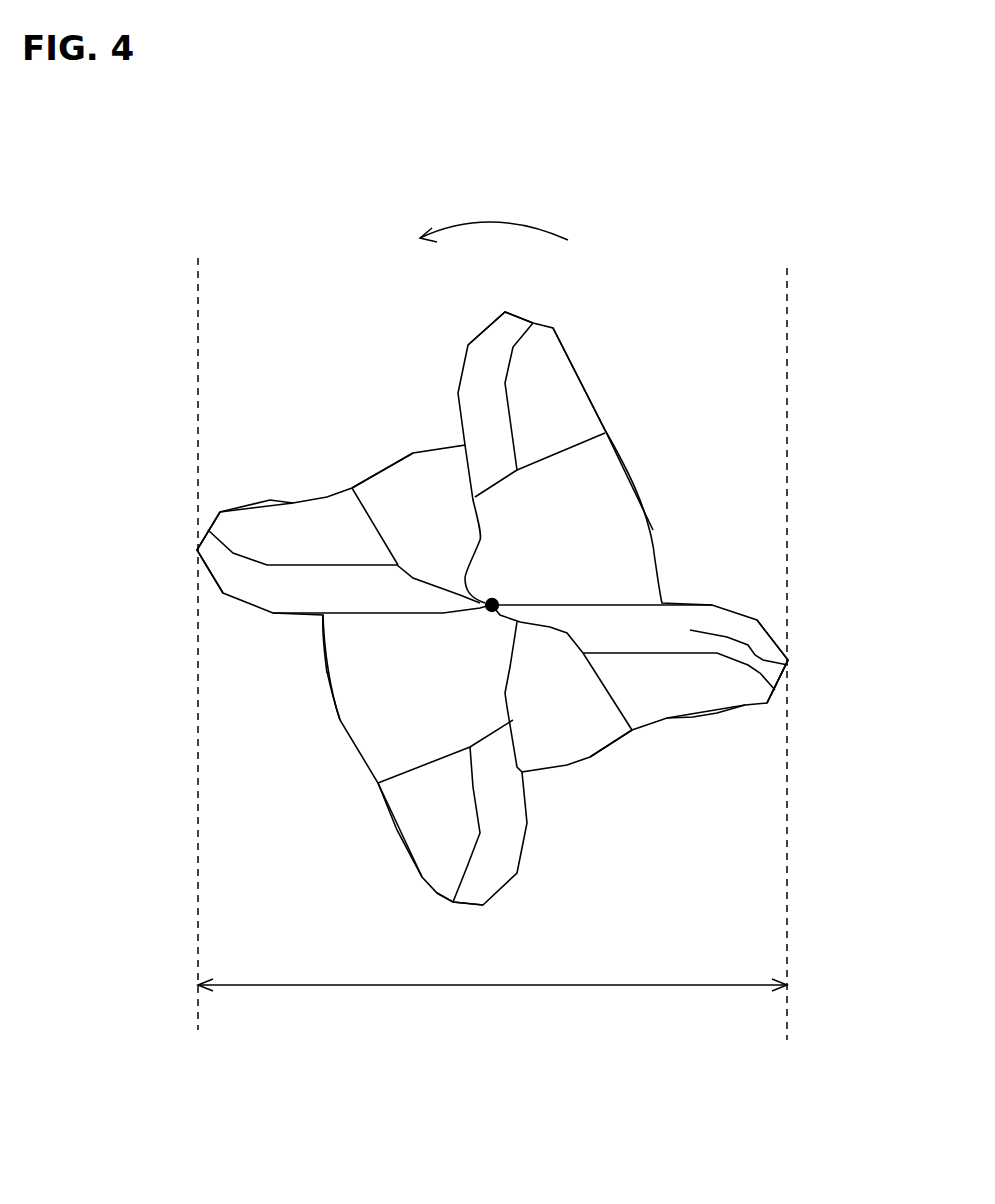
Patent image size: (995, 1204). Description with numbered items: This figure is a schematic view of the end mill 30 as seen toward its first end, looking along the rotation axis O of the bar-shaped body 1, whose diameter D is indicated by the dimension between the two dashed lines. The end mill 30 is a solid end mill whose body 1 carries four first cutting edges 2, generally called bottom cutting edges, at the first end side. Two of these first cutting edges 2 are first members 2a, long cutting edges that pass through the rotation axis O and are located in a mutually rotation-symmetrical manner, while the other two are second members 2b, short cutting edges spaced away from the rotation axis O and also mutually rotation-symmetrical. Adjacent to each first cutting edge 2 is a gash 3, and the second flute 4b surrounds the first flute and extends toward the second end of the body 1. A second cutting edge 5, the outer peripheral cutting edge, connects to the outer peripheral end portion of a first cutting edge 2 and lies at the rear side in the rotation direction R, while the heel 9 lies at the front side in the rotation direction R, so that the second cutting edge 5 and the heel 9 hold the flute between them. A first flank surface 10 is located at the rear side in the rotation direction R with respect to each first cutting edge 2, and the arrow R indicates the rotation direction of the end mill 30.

The body 1 is at (565, 337).
The first cutting edge 2 is at (539, 601).
The first member 2a is at (238, 600).
The second member 2b is at (460, 367).
The gash 3 is at (420, 477).
The second flute 4b is at (550, 397).
The second cutting edge 5 is at (788, 657).
The heel 9 is at (212, 527).
The first flank surface 10 is at (482, 352).
The end mill 30 is at (332, 350).